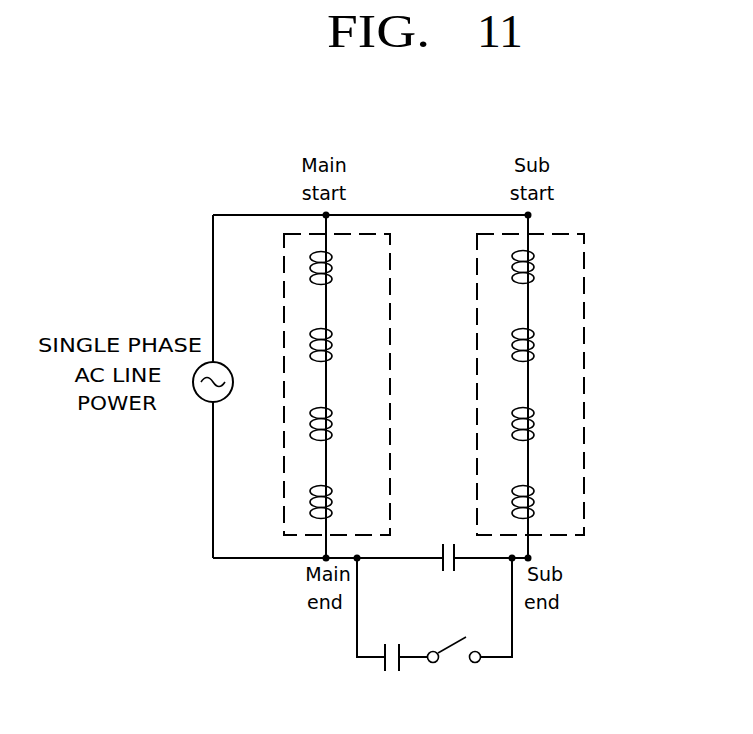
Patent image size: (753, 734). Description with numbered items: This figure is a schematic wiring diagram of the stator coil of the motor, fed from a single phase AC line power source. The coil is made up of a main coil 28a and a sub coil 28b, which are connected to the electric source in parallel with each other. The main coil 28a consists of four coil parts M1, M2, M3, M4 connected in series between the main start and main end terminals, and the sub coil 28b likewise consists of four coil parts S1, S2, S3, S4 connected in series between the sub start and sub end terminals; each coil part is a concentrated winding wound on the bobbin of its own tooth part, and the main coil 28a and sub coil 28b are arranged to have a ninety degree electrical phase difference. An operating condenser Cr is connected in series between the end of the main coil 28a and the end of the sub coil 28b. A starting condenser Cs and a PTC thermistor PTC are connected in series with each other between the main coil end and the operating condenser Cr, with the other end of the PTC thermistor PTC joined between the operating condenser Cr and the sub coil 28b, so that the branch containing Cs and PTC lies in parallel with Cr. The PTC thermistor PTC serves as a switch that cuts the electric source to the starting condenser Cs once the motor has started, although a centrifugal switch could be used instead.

The main coil 28a is at (364, 343).
The sub coil 28b is at (556, 343).
The coil part M1 is at (339, 268).
The coil part M2 is at (339, 345).
The coil part M3 is at (339, 424).
The coil part M4 is at (339, 502).
The coil part S1 is at (538, 267).
The coil part S2 is at (538, 345).
The coil part S3 is at (538, 424).
The coil part S4 is at (538, 502).
The operating condenser Cr is at (451, 573).
The starting condenser Cs is at (391, 672).
The PTC thermistor PTC is at (454, 665).